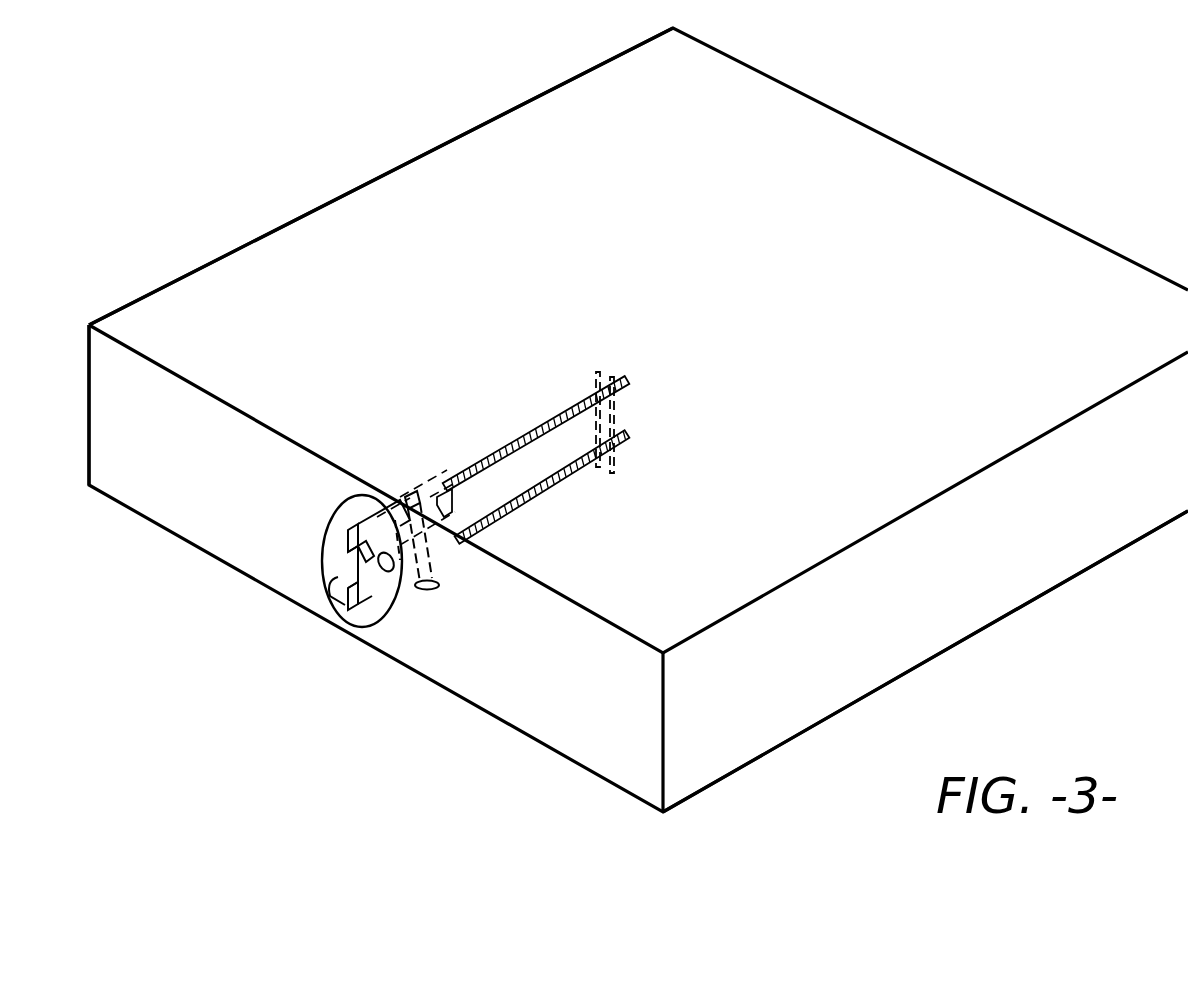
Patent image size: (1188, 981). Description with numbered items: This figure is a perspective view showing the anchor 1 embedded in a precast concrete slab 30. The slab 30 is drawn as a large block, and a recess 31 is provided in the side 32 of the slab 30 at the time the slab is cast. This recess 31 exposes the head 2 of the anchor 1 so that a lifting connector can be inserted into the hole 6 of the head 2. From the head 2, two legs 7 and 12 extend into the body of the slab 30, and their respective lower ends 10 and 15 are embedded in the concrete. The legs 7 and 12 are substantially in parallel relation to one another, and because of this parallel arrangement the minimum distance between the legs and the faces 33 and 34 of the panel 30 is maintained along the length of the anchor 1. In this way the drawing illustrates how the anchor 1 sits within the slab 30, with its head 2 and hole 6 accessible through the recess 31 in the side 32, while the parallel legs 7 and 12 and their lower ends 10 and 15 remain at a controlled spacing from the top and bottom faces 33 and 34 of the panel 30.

The anchor 1 is at (470, 452).
The head 2 is at (392, 590).
The hole 6 is at (400, 575).
The leg 7 is at (525, 427).
The lower end 10 is at (567, 410).
The leg 12 is at (550, 498).
The lower end 15 is at (582, 473).
The precast concrete slab 30 is at (895, 215).
The recess 31 is at (340, 548).
The side 32 is at (193, 510).
The face 33 is at (513, 170).
The face 34 is at (977, 632).